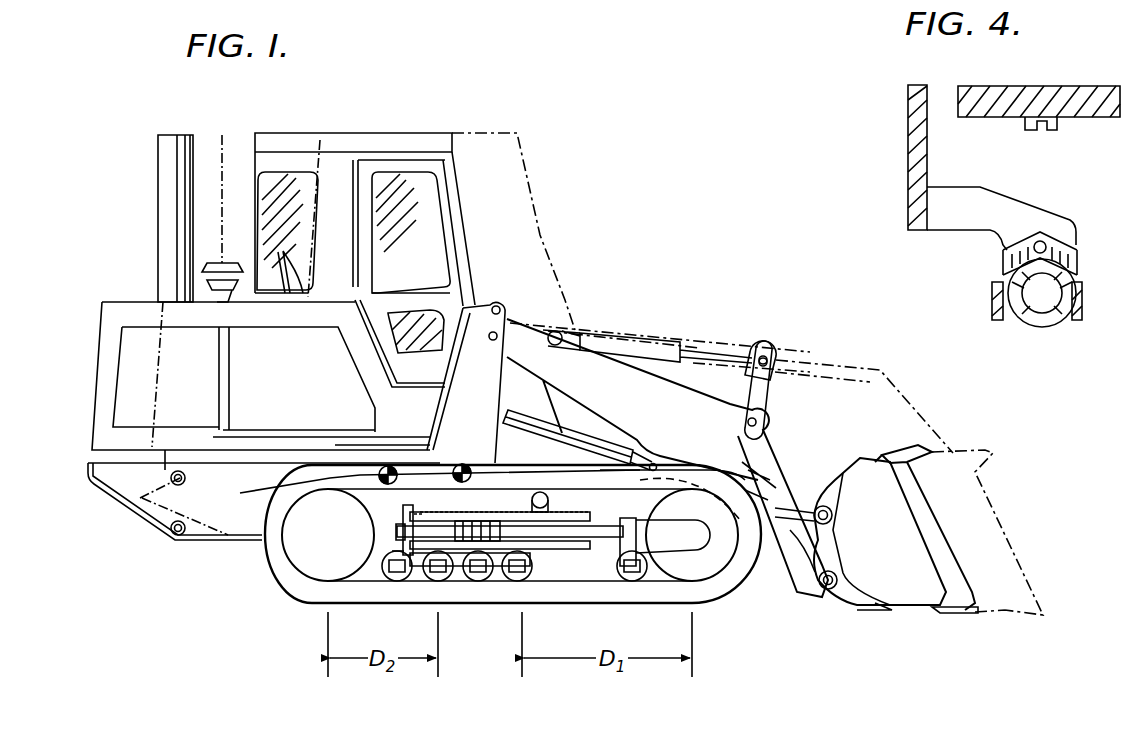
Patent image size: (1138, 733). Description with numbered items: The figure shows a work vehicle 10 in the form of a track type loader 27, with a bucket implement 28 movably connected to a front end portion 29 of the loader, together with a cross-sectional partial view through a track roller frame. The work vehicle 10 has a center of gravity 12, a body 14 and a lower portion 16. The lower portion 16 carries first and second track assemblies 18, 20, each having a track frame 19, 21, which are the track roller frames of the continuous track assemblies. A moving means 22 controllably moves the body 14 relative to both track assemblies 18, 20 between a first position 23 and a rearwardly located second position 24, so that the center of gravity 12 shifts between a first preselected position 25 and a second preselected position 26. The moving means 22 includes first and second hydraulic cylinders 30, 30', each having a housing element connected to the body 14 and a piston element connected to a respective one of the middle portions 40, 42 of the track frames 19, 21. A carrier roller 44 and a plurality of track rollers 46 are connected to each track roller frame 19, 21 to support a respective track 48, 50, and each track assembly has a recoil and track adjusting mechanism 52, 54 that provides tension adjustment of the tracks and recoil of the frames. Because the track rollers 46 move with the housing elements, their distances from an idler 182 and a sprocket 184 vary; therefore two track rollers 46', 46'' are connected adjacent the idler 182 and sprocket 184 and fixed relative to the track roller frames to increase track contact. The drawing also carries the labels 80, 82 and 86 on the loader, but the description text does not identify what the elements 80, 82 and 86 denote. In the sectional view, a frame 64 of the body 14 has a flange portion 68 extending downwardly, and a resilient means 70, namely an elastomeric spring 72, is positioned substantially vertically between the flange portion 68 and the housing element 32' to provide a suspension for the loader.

In FIG. 1, the work vehicle 10 is at (555, 126).
In FIG. 1, the center of gravity 12 is at (471, 466).
In FIG. 1, the body 14 is at (278, 364).
In FIG. 1, the lower portion 16 is at (292, 462).
In FIG. 1, the first track assembly 18 is at (270, 582).
In FIG. 1, the track frame 19 is at (604, 492).
In FIG. 1, the second track assembly 20 is at (248, 552).
In FIG. 1, the track frame 21 is at (650, 470).
In FIG. 4, the track frame 21 is at (1072, 316).
In FIG. 1, the moving means 22 is at (514, 430).
In FIG. 1, the first position 23 is at (106, 496).
In FIG. 1, the second position 24 is at (142, 527).
In FIG. 1, the first preselected position 25 is at (465, 486).
In FIG. 1, the second preselected position 26 is at (392, 487).
In FIG. 1, the track type loader 27 is at (560, 232).
In FIG. 1, the bucket implement 28 is at (885, 534).
In FIG. 1, the front end portion 29 is at (758, 318).
In FIG. 1, the first hydraulic cylinder 30 is at (553, 572).
In FIG. 1, the second hydraulic cylinder 30' is at (547, 599).
In FIG. 4, the housing element 32' is at (1065, 293).
In FIG. 1, the middle portion 40 is at (438, 585).
In FIG. 1, the middle portion 42 is at (420, 587).
In FIG. 1, the carrier roller 44 is at (536, 494).
In FIG. 1, the track rollers 46 is at (477, 597).
In FIG. 1, the track roller 46' is at (642, 592).
In FIG. 1, the track roller 46'' is at (371, 595).
In FIG. 1, the track 48 is at (760, 484).
In FIG. 1, the track 50 is at (760, 470).
In FIG. 4, the track 50 is at (1038, 92).
In FIG. 1, the recoil and track adjusting mechanism 52 is at (445, 502).
In FIG. 1, the recoil and track adjusting mechanism 54 is at (430, 500).
In FIG. 1, the frame 64 is at (466, 366).
In FIG. 4, the frame 64 is at (921, 160).
In FIG. 4, the second flange portion 68 is at (1022, 208).
In FIG. 4, the resilient means 70 is at (1087, 224).
In FIG. 4, the elastomeric spring 72 is at (1072, 262).
In FIG. 1, the tilt cylinder 80 is at (660, 312).
In FIG. 1, the engine hood 82 is at (103, 338).
In FIG. 1, the track shoe 86 is at (300, 606).
In FIG. 1, the idler 182 is at (712, 580).
In FIG. 1, the sprocket 184 is at (300, 545).